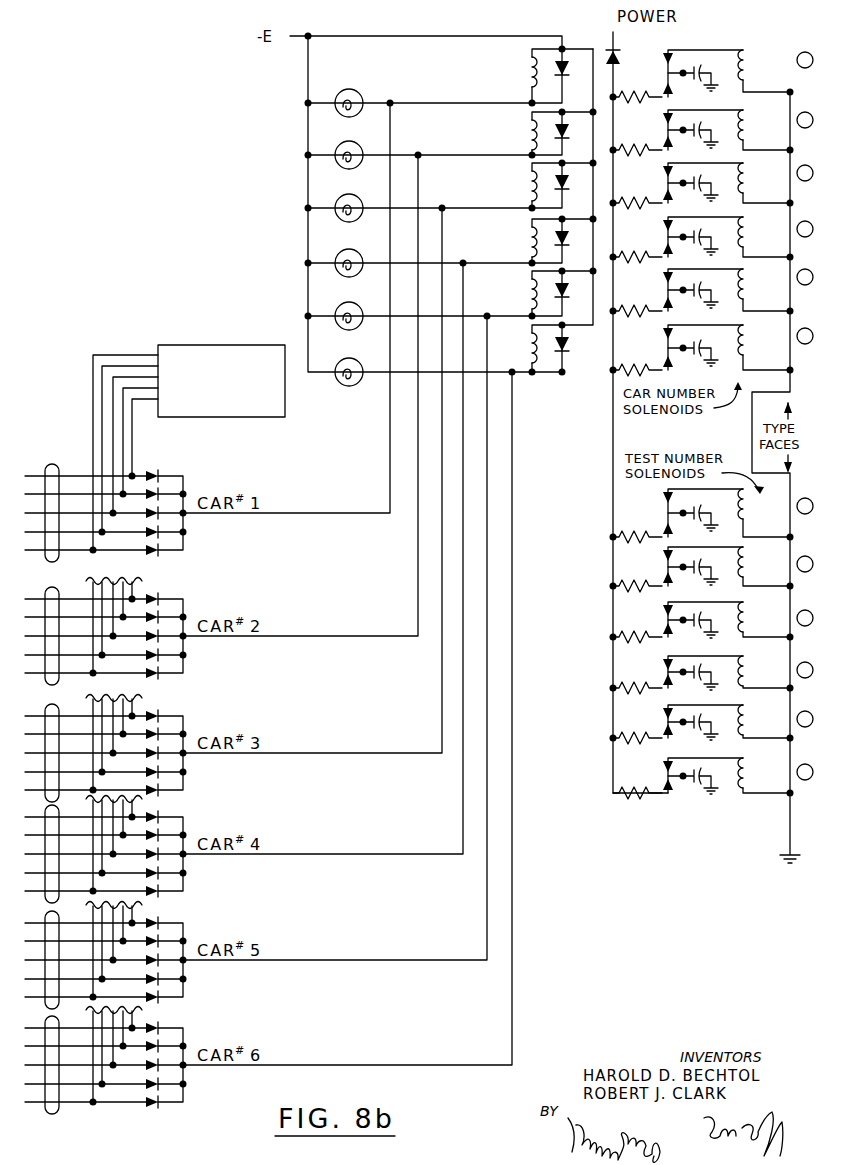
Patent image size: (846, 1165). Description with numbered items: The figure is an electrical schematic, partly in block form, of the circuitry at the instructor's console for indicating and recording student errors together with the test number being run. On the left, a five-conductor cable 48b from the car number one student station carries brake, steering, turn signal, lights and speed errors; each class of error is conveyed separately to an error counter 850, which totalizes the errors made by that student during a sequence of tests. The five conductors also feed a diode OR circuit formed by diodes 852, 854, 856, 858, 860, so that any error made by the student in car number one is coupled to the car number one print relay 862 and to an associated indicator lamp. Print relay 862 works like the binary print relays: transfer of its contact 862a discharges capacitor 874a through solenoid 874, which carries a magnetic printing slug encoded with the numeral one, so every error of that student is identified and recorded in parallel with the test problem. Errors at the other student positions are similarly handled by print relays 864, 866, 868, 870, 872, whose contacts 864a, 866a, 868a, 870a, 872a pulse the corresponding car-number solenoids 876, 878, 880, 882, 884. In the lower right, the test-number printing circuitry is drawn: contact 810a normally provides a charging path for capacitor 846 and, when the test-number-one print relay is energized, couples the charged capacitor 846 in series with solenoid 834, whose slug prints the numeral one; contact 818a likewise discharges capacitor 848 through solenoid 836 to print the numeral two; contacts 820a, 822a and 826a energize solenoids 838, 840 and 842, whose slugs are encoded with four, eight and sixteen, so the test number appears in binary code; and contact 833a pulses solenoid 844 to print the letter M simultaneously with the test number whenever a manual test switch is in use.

The cable 48b is at (68, 432).
The error counter 850 is at (190, 345).
The diode 852 is at (157, 473).
The diode 854 is at (151, 496).
The diode 856 is at (150, 516).
The diode 858 is at (148, 534).
The diode 860 is at (148, 552).
The car No. 1 print relay 862 is at (530, 76).
The print relay 864 is at (530, 128).
The print relay 866 is at (532, 182).
The print relay 868 is at (532, 236).
The print relay 870 is at (532, 288).
The print relay 872 is at (532, 345).
The contact 862a is at (637, 86).
The contact 864a is at (637, 139).
The contact 866a is at (637, 192).
The contact 868a is at (637, 246).
The contact 870a is at (637, 299).
The contact 872a is at (637, 358).
The solenoid 874 is at (797, 60).
The capacitor 874a is at (699, 71).
The solenoid 876 is at (790, 120).
The solenoid 878 is at (790, 173).
The solenoid 880 is at (790, 229).
The solenoid 882 is at (797, 277).
The solenoid 884 is at (797, 336).
The contact 810a is at (637, 517).
The contact 818a is at (637, 569).
The contact 820a is at (637, 622).
The contact 822a is at (637, 674).
The contact 826a is at (637, 724).
The contact 833a is at (637, 778).
The solenoid 834 is at (790, 506).
The solenoid 836 is at (790, 564).
The solenoid 838 is at (790, 618).
The solenoid 840 is at (790, 670).
The solenoid 842 is at (797, 719).
The solenoid 844 is at (797, 772).
The capacitor 846 is at (696, 510).
The capacitor 848 is at (696, 566).